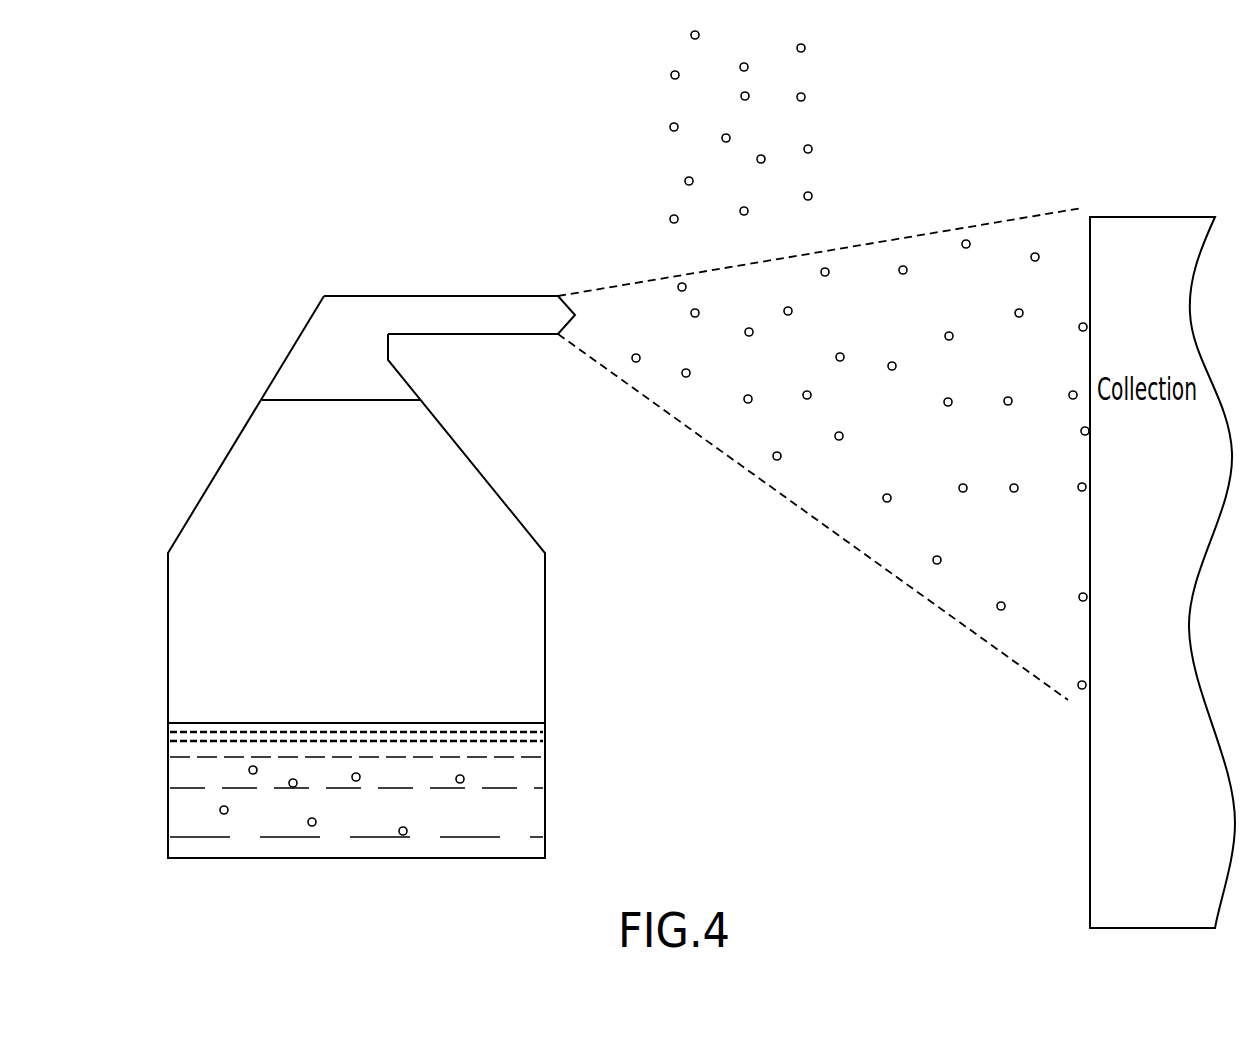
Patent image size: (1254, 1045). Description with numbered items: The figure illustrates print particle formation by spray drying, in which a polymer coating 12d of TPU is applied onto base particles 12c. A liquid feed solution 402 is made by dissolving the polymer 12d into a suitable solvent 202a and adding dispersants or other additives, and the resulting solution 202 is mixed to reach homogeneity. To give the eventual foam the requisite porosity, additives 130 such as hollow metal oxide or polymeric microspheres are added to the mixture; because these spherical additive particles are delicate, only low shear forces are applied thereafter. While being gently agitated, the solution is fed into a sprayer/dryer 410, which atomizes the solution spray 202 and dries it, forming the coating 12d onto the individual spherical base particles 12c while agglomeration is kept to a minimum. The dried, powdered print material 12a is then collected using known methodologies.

The sprayer/dryer 410 is at (342, 295).
The liquid feed solution 402 is at (408, 674).
The solution 202 is at (500, 728).
The solvent 202a is at (195, 842).
The coating 12d is at (612, 288).
The base particles 12c is at (804, 52).
The print material 12a is at (963, 241).
The additives 130 is at (399, 833).